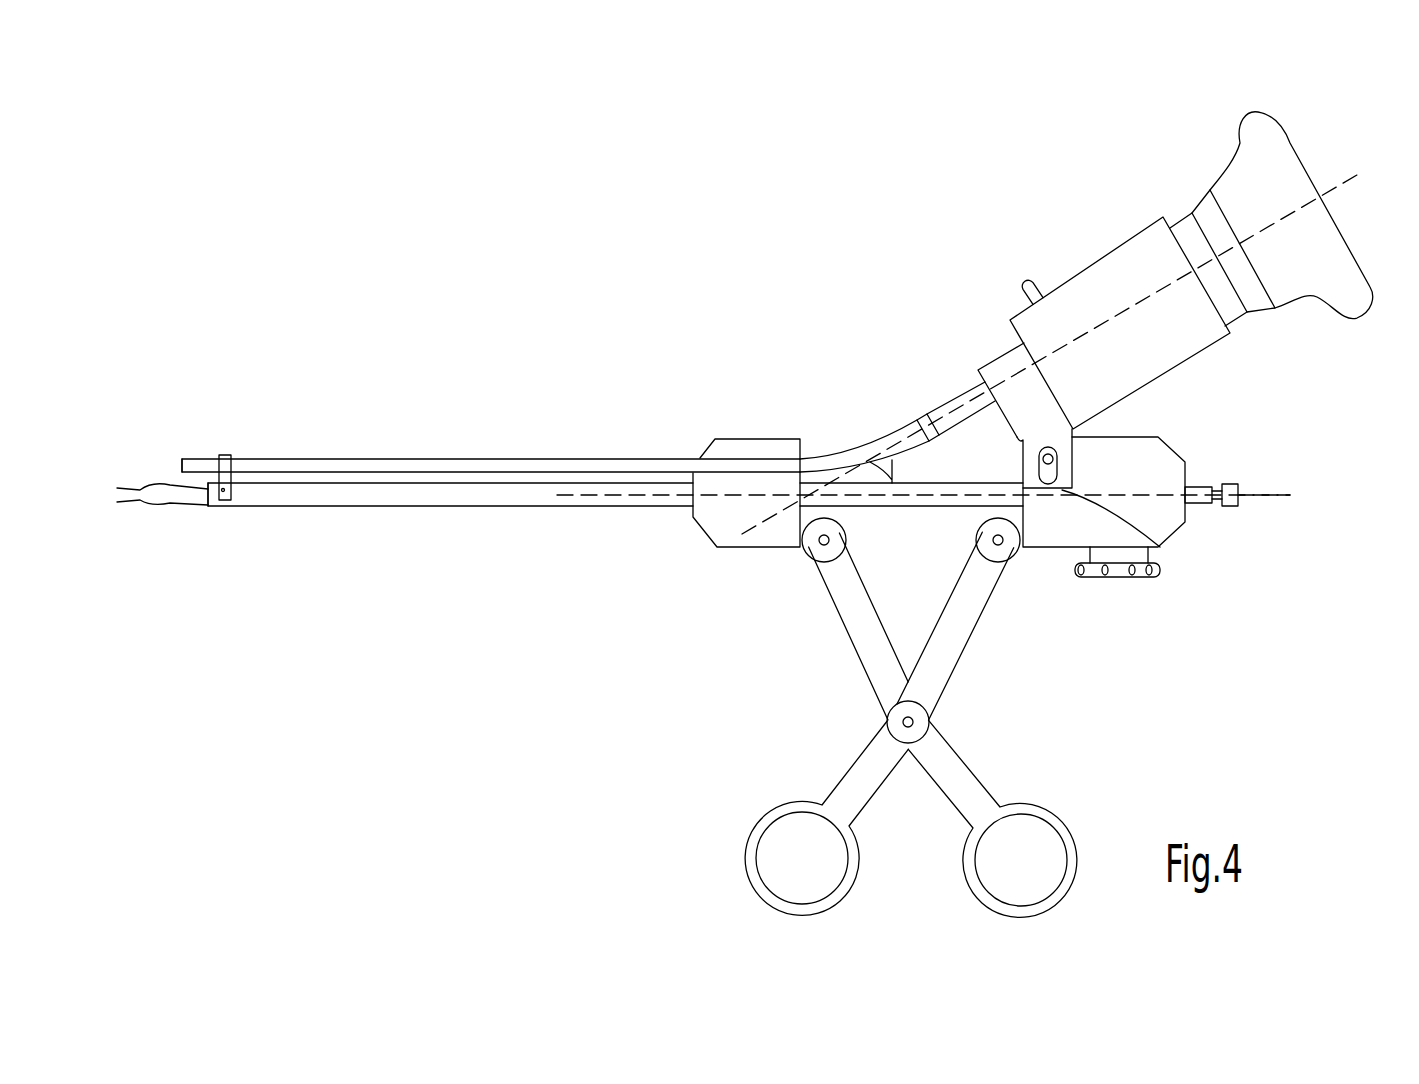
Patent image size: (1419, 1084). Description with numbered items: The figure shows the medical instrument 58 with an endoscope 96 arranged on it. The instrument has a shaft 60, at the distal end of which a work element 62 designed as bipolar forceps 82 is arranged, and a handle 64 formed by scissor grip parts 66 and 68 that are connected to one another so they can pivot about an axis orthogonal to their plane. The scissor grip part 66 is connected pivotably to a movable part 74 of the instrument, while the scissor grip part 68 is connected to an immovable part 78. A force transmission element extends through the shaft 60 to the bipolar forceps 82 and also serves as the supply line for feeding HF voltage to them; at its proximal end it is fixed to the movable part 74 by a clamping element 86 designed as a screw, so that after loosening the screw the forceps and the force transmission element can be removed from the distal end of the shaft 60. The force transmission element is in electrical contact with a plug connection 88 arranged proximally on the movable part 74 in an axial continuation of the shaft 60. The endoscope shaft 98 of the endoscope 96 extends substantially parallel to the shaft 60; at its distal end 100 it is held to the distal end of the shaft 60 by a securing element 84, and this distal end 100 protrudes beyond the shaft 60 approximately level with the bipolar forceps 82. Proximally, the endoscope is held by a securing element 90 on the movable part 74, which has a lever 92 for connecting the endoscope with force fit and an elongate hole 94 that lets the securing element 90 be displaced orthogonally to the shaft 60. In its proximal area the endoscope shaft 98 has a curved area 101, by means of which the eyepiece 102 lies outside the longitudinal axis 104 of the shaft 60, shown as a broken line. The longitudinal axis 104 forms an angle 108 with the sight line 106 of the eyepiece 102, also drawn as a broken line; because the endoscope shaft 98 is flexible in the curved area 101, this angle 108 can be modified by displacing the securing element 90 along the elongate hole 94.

The medical instrument 58 is at (659, 392).
The shaft 60 is at (425, 534).
The work element 62 is at (175, 528).
The handle 64 is at (957, 742).
The scissor grip part 66 is at (964, 603).
The scissor grip part 68 is at (877, 647).
The movable part 74 is at (1054, 549).
The immovable part 78 is at (700, 528).
The bipolar forceps 82 is at (166, 487).
The securing element 84 is at (229, 460).
The clamping element 86 is at (1139, 578).
The plug connection 88 is at (1207, 487).
The securing element 90 is at (1000, 373).
The lever 92 is at (1031, 280).
The elongate hole 94 is at (1060, 494).
The endoscope 96 is at (1100, 236).
The endoscope shaft 98 is at (546, 445).
The distal end 100 is at (212, 455).
The curved area 101 is at (877, 445).
The eyepiece 102 is at (1291, 142).
The longitudinal axis 104 is at (1272, 512).
The sight line 106 is at (1358, 186).
The angle 108 is at (871, 462).